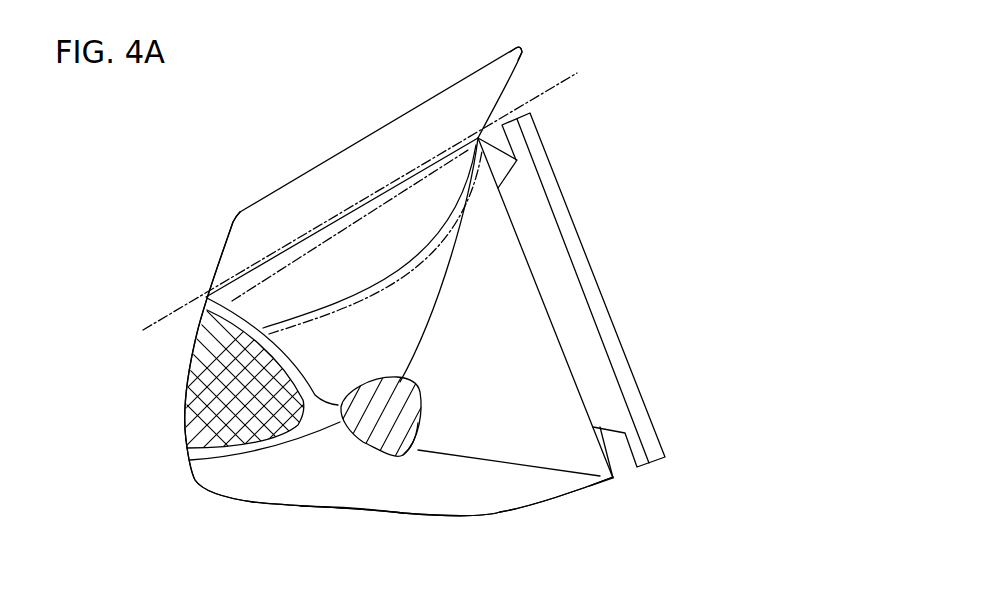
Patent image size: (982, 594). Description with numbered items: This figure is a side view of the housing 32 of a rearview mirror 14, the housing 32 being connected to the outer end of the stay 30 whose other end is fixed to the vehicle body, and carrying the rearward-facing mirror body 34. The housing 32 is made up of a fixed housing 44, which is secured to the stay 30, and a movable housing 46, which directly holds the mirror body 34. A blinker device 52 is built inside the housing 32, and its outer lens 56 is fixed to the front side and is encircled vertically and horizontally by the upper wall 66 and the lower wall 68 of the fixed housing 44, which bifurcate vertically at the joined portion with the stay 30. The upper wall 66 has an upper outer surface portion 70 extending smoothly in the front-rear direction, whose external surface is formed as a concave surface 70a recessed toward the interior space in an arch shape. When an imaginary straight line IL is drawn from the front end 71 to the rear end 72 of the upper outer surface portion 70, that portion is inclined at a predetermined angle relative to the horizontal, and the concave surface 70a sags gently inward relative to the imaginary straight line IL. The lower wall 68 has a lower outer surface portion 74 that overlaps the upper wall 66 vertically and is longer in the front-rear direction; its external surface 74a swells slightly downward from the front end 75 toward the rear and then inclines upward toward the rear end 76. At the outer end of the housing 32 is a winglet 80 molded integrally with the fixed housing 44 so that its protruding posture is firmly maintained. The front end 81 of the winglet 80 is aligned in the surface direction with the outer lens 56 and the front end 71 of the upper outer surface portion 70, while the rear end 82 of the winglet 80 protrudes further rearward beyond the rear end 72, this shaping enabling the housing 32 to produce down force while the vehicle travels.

The rearview mirror 14 is at (148, 137).
The housing 32 is at (176, 258).
The mirror body 34 is at (592, 263).
The stay 30 is at (422, 396).
The fixed housing 44 is at (285, 487).
The movable housing 46 is at (578, 340).
The blinker device 52 is at (265, 441).
The outer lens 56 is at (210, 380).
The upper wall 66 is at (500, 250).
The lower wall 68 is at (455, 500).
The upper outer surface portion 70 is at (375, 242).
The concave surface 70a is at (390, 283).
The front end 71 is at (205, 297).
The rear end 72 is at (518, 160).
The lower outer surface portion 74 is at (451, 514).
The external surface 74a is at (337, 510).
The front end 75 is at (186, 458).
The rear end 76 is at (613, 478).
The winglet 80 is at (338, 152).
The front end 81 is at (215, 257).
The rear end 82 is at (522, 50).
The imaginary straight line IL is at (568, 80).